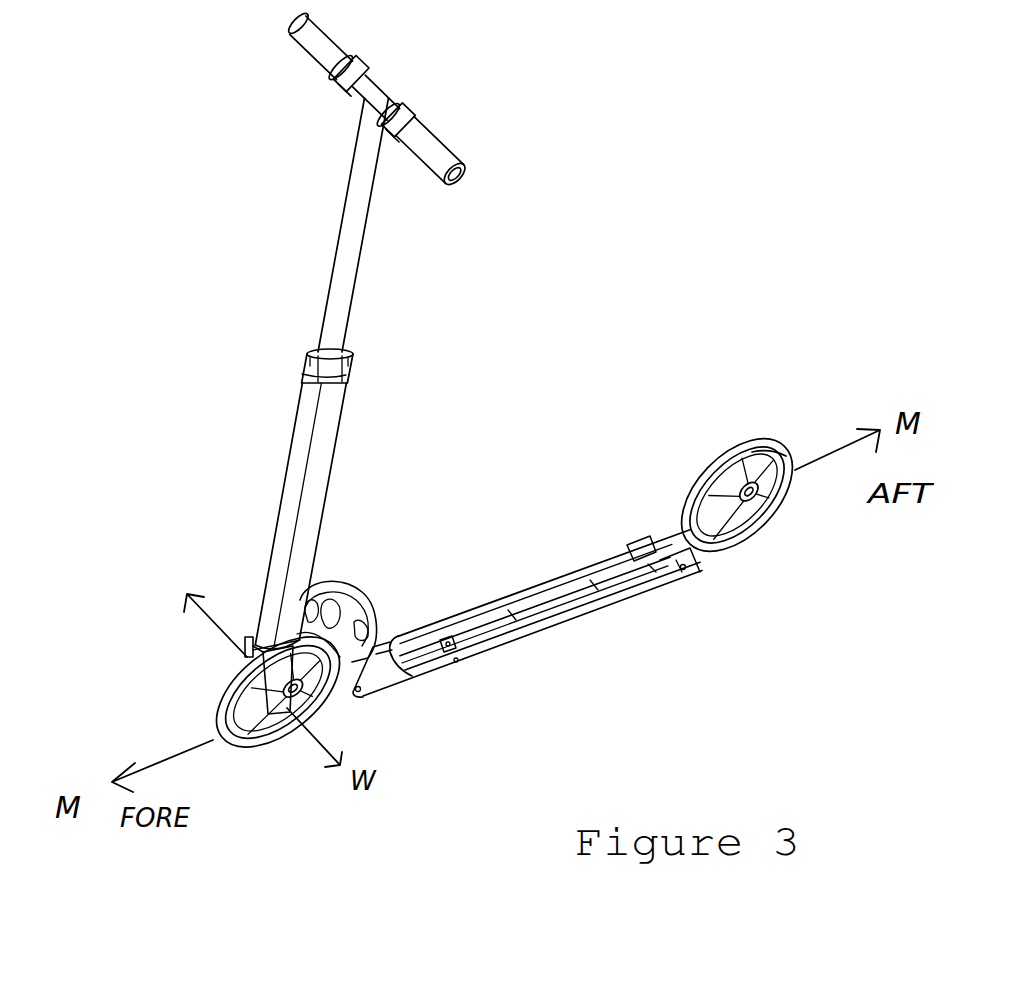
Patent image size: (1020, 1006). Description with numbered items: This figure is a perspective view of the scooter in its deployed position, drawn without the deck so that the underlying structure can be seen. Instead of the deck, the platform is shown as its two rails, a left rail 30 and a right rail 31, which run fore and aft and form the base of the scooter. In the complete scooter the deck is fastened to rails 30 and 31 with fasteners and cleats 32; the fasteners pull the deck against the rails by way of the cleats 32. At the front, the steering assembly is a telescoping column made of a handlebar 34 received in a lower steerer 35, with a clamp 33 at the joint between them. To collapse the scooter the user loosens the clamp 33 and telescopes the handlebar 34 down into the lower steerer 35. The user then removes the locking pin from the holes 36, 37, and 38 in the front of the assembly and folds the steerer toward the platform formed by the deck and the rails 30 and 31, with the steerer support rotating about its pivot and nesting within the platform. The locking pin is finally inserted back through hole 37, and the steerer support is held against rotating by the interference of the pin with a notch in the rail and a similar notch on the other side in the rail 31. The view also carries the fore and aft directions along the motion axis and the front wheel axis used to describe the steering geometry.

The left rail 30 is at (545, 617).
The right rail 31 is at (557, 580).
The cleat 32 is at (449, 640).
The clamp 33 is at (341, 373).
The handlebar 34 is at (335, 309).
The lower steerer 35 is at (318, 483).
The hole 36 is at (381, 655).
The hole 37 is at (376, 650).
The hole 38 is at (360, 632).